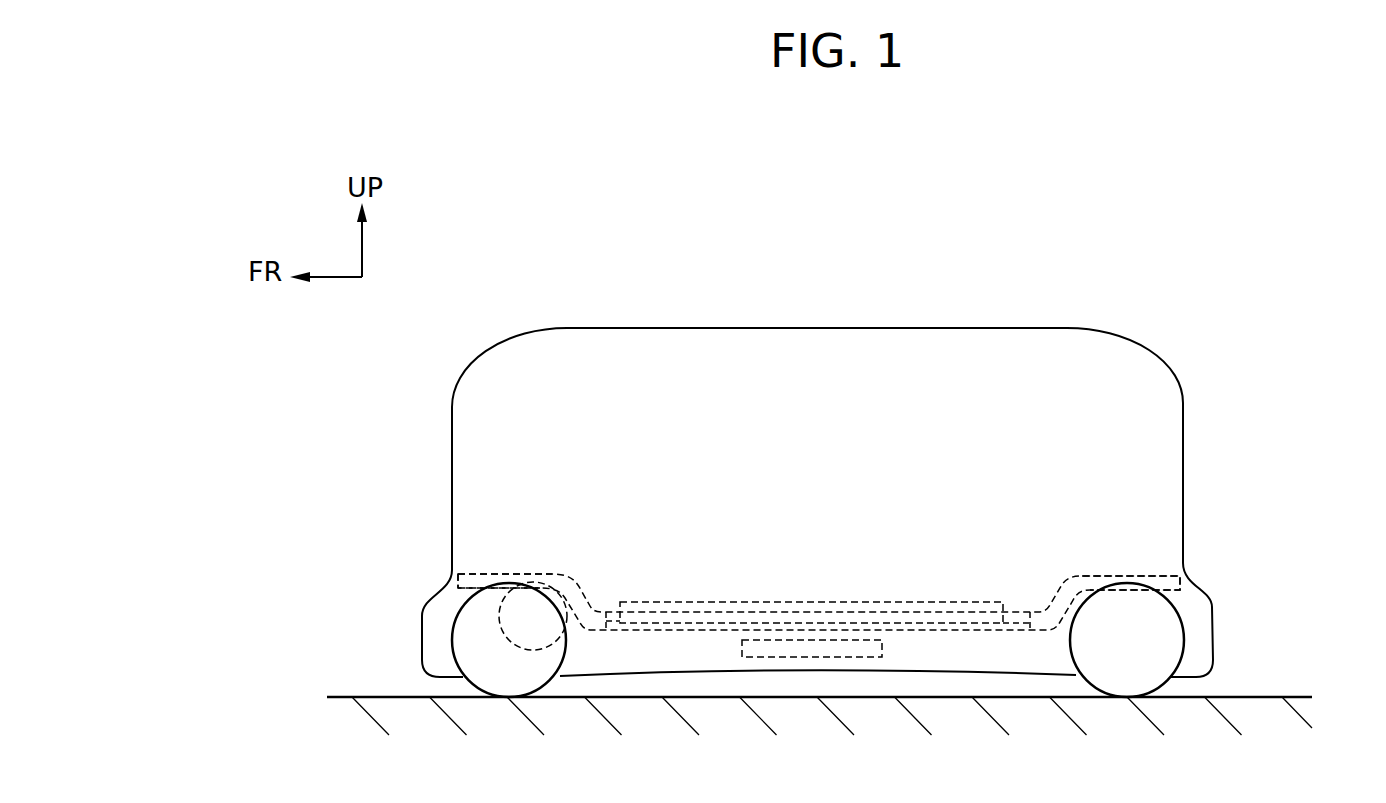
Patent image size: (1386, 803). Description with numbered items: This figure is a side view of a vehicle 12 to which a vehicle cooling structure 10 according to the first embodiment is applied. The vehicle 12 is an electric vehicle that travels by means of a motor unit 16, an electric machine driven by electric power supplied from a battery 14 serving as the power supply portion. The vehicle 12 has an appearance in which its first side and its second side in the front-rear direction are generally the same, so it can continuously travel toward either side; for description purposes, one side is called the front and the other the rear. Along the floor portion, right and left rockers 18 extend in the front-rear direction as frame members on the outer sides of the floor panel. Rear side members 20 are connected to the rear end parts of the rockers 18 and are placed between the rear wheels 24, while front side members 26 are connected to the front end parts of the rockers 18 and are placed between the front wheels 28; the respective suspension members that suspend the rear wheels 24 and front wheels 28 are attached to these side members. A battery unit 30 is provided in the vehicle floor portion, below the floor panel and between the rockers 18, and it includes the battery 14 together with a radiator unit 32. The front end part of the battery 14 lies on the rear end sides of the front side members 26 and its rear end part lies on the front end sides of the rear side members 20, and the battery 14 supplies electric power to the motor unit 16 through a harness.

The vehicle cooling structure 10 is at (873, 589).
The vehicle 12 is at (1140, 322).
The battery 14 is at (735, 602).
The motor unit 16 is at (502, 602).
The rocker 18 is at (607, 612).
The rear side member 20 is at (1124, 576).
The rear wheel 24 is at (1185, 628).
The front side member 26 is at (477, 574).
The front wheel 28 is at (450, 635).
The battery unit 30 is at (1005, 598).
The radiator unit 32 is at (892, 644).